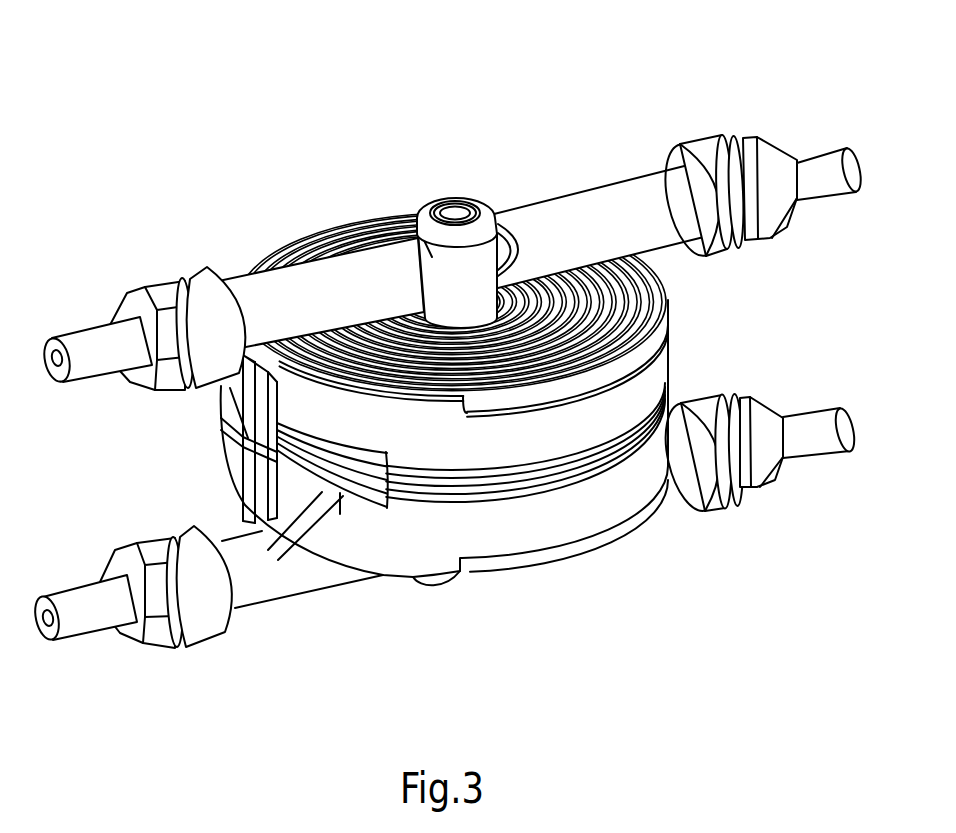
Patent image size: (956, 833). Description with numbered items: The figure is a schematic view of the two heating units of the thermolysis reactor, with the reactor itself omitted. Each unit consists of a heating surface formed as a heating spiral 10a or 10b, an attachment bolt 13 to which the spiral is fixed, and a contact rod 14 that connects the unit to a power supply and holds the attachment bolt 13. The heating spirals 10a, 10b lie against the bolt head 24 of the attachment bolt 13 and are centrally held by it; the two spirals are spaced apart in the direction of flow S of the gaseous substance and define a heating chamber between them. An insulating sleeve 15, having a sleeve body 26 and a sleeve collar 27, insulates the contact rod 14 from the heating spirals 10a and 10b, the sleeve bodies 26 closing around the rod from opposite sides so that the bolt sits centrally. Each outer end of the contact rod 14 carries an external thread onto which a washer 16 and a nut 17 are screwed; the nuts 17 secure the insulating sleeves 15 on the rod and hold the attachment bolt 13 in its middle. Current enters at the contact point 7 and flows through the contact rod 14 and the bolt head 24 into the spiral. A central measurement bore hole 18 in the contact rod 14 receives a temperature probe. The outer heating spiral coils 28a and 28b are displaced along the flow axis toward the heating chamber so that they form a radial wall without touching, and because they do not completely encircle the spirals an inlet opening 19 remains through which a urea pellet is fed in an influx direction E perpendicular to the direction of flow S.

The contact point 7 is at (773, 164).
The heating surface (heating spiral) 10a is at (312, 232).
The heating surface (heating spiral) 10b is at (372, 510).
The attachment bolt 13 is at (449, 190).
The contact rod 14 is at (813, 160).
The insulating sleeve 15 is at (518, 198).
The washer 16 is at (740, 140).
The nut 17 is at (763, 150).
The measurement bore hole 18 is at (44, 368).
The inlet opening 19 is at (233, 478).
The bolt head 24 is at (430, 255).
The sleeve body 26 is at (574, 208).
The sleeve collar 27 is at (703, 152).
The outer heating spiral coil 28a is at (640, 392).
The outer heating spiral coil 28b is at (532, 540).
The influx direction E is at (298, 539).
The direction of flow S is at (467, 48).